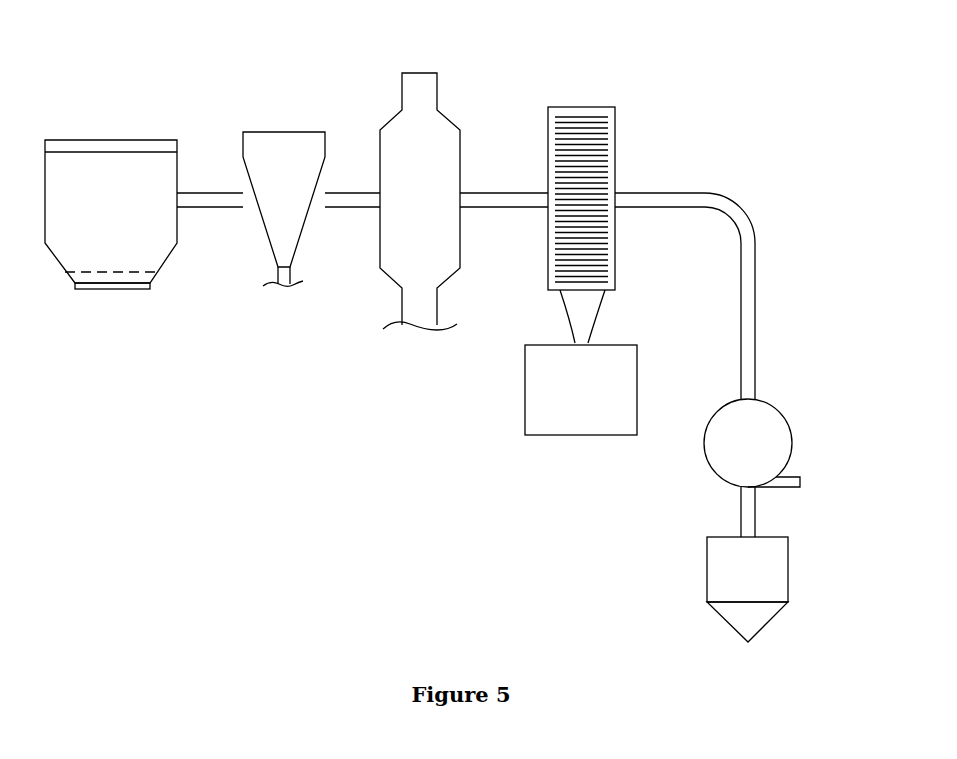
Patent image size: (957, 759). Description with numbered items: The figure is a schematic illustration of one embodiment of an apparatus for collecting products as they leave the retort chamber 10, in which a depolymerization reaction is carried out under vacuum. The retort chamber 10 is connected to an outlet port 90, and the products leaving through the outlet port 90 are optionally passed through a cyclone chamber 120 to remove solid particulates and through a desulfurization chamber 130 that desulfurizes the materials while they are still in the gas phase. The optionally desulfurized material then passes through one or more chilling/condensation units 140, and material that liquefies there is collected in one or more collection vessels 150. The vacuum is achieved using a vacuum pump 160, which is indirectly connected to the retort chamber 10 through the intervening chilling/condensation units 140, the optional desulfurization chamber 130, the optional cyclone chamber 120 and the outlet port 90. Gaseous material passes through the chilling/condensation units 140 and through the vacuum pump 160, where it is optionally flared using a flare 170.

The retort chamber 10 is at (112, 126).
The outlet port 90 is at (207, 165).
The cyclone chamber 120 is at (263, 116).
The desulfurization chamber 130 is at (418, 59).
The chilling/condensation unit 140 is at (582, 94).
The collection vessel 150 is at (514, 388).
The vacuum pump 160 is at (819, 438).
The flare 170 is at (803, 570).